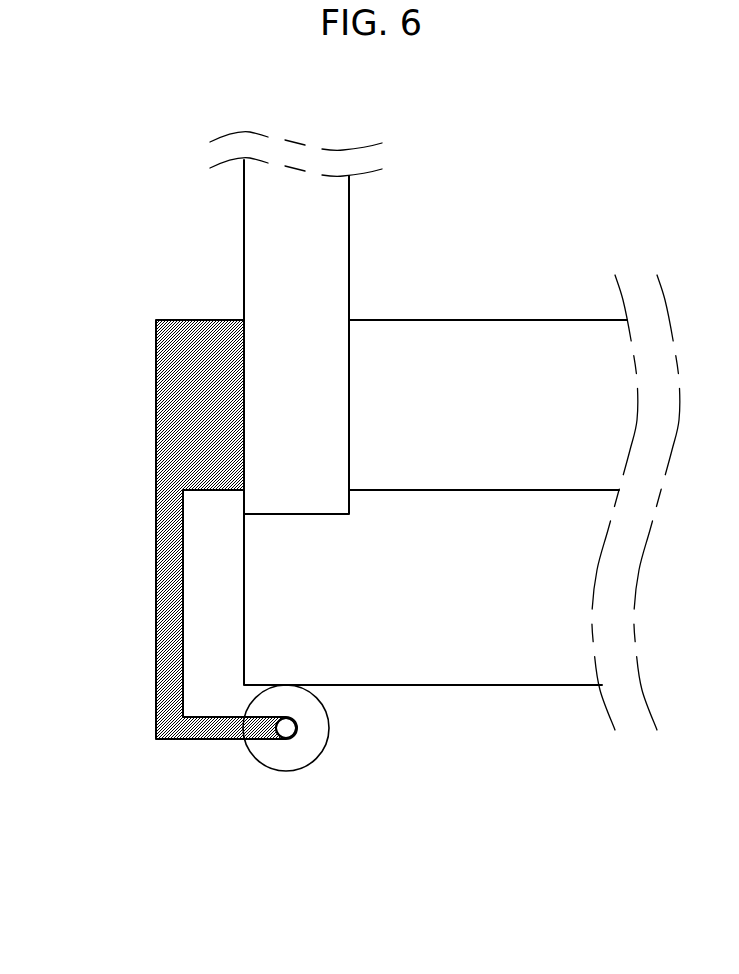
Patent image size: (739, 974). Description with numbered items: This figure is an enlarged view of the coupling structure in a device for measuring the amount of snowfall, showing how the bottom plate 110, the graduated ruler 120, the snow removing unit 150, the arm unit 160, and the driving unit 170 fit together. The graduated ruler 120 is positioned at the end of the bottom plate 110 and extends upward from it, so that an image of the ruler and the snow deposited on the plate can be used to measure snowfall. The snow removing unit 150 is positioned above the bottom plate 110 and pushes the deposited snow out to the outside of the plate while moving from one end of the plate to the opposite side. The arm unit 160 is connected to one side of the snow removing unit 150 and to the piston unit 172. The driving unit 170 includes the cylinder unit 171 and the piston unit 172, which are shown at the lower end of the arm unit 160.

The bottom plate 110 is at (490, 670).
The graduated ruler 120 is at (262, 244).
The snow removing unit 150 is at (495, 348).
The arm unit 160 is at (165, 653).
The driving unit 170 is at (343, 843).
The cylinder unit 171 is at (310, 745).
The piston unit 172 is at (286, 730).